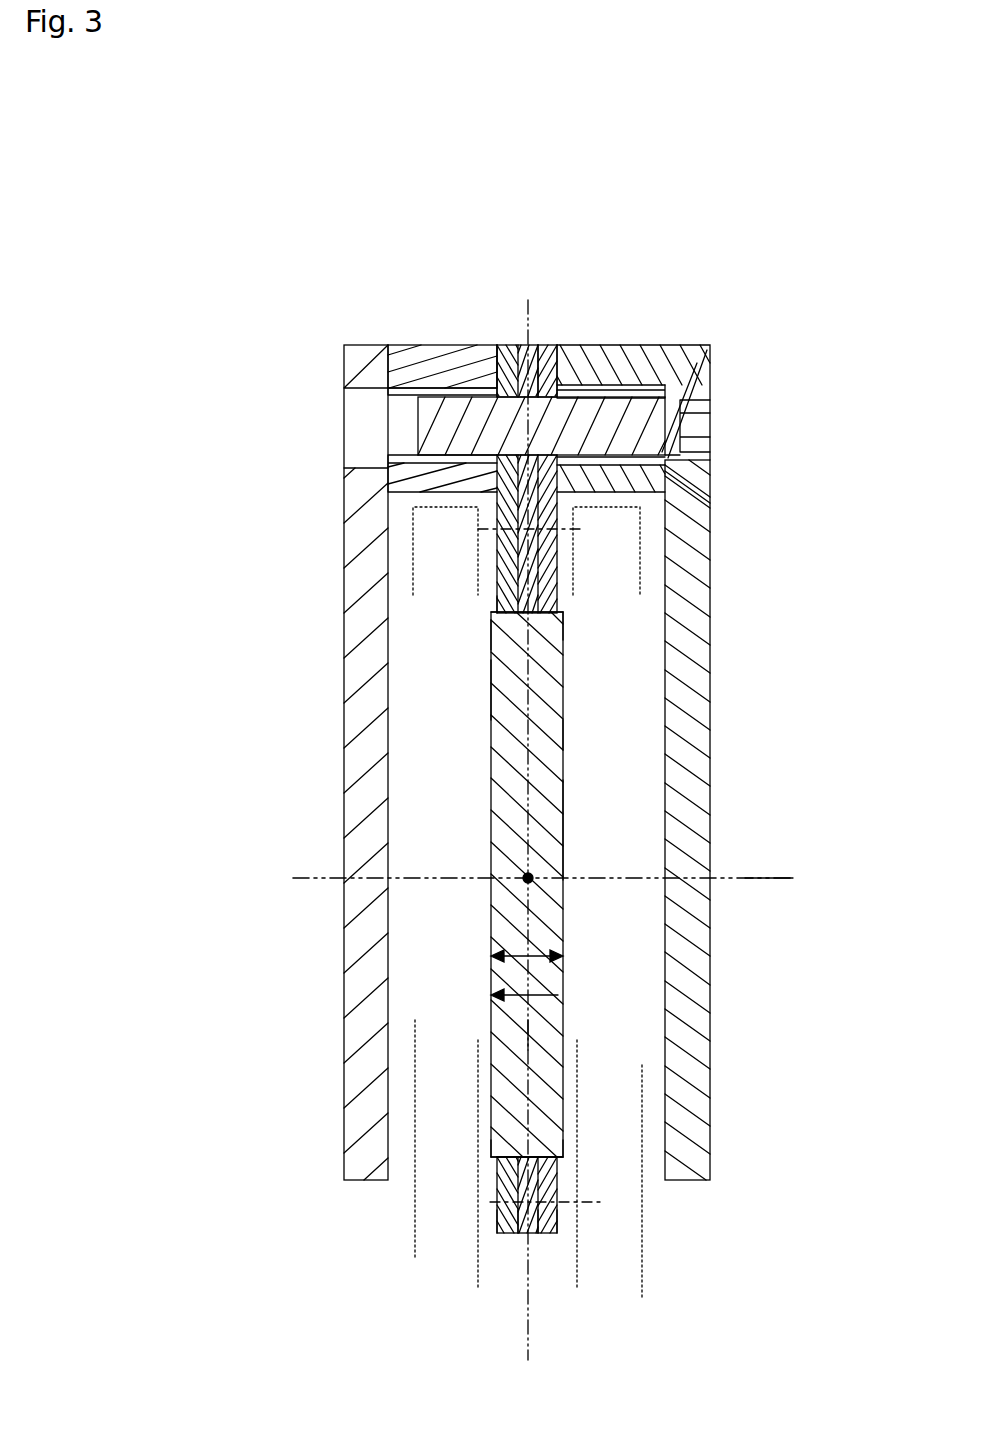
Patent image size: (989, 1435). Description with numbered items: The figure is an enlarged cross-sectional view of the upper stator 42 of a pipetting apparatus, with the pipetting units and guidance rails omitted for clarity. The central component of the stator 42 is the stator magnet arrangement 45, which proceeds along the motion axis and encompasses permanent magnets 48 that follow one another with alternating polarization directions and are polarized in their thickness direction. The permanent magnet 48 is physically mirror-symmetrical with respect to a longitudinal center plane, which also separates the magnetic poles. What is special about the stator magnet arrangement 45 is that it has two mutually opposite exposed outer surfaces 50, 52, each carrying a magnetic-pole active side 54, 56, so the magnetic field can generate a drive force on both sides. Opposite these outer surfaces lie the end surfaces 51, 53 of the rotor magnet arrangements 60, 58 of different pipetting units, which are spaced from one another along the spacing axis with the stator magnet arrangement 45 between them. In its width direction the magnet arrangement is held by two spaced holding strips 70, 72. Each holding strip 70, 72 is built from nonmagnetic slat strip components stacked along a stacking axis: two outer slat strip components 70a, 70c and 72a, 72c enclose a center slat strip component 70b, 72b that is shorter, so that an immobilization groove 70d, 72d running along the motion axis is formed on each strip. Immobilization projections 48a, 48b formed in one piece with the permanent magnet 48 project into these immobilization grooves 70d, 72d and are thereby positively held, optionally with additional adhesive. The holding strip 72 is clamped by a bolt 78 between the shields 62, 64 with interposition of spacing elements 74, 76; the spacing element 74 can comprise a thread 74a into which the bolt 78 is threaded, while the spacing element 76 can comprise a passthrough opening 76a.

The stator 42 is at (822, 240).
The stator magnet arrangement 45 is at (597, 617).
The permanent magnet 48 is at (552, 678).
The immobilization projection 48a is at (499, 1151).
The immobilization projection 48b is at (517, 603).
The exposed outer surface 50 is at (570, 822).
The end surface 51 is at (565, 1185).
The exposed outer surface 52 is at (487, 705).
The end surface 53 is at (490, 1143).
The magnetic-pole active side 54 is at (591, 737).
The magnetic-pole active side 56 is at (478, 632).
The rotor magnet arrangement 58 is at (413, 572).
The rotor magnet arrangement 60 is at (640, 560).
The shield 62 is at (360, 633).
The shield 64 is at (700, 1116).
The holding strip 70 is at (540, 1268).
The outer slat strip component 70a is at (510, 1233).
The center slat strip component 70b is at (528, 1233).
The outer slat strip component 70c is at (548, 1233).
The immobilization groove 70d is at (522, 1165).
The holding strip 72 is at (520, 322).
The outer slat strip component 72a is at (510, 358).
The center slat strip component 72b is at (535, 360).
The outer slat strip component 72c is at (557, 385).
The immobilization groove 72d is at (465, 582).
The spacing element 74 is at (455, 352).
The thread 74a is at (408, 392).
The spacing element 76 is at (651, 355).
The passthrough opening 76a is at (658, 392).
The bolt 78 is at (653, 428).